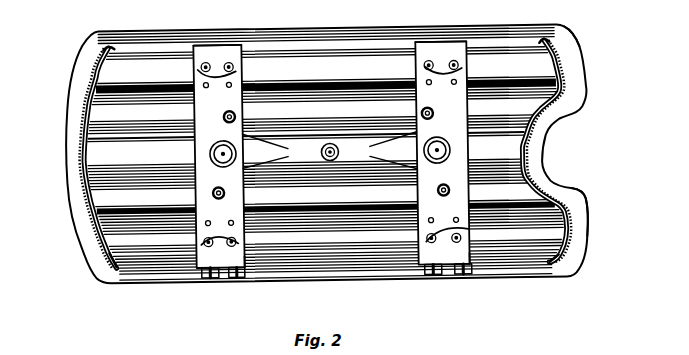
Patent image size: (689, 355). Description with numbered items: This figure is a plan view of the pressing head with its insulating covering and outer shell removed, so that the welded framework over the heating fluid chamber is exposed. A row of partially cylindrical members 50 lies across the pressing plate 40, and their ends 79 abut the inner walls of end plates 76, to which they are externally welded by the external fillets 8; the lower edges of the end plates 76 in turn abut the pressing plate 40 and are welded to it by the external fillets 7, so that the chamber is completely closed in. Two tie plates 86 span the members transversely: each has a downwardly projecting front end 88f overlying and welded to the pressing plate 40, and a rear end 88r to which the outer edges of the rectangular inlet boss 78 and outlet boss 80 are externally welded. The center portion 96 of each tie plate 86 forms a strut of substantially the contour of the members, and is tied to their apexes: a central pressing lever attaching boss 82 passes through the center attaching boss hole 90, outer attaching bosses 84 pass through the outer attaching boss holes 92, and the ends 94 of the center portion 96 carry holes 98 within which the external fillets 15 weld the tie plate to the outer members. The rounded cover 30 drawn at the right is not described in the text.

The external fillets 7 is at (82, 133).
The external fillets 8 is at (110, 57).
The external fillets 15 is at (199, 73).
The cover 30 is at (592, 57).
The pressing plate 40 is at (580, 206).
The partially cylindrical members 50 is at (317, 110).
The end plates 76 is at (88, 194).
The inlet boss 78 is at (435, 262).
The ends of the partially cylindrical members 79 is at (107, 237).
The outlet boss 80 is at (226, 245).
The central attaching boss 82 is at (237, 153).
The outer attaching bosses 84 is at (236, 116).
The tie plates 86 is at (197, 113).
The front end of tie plate 88f is at (233, 42).
The rear end of tie plate 88r is at (461, 45).
The center attaching boss hole 90 is at (208, 153).
The outer attaching boss holes 92 is at (330, 152).
The ends of the center portion 94 is at (247, 76).
The center portion of tie plate 96 is at (255, 212).
The holes 98 is at (229, 61).